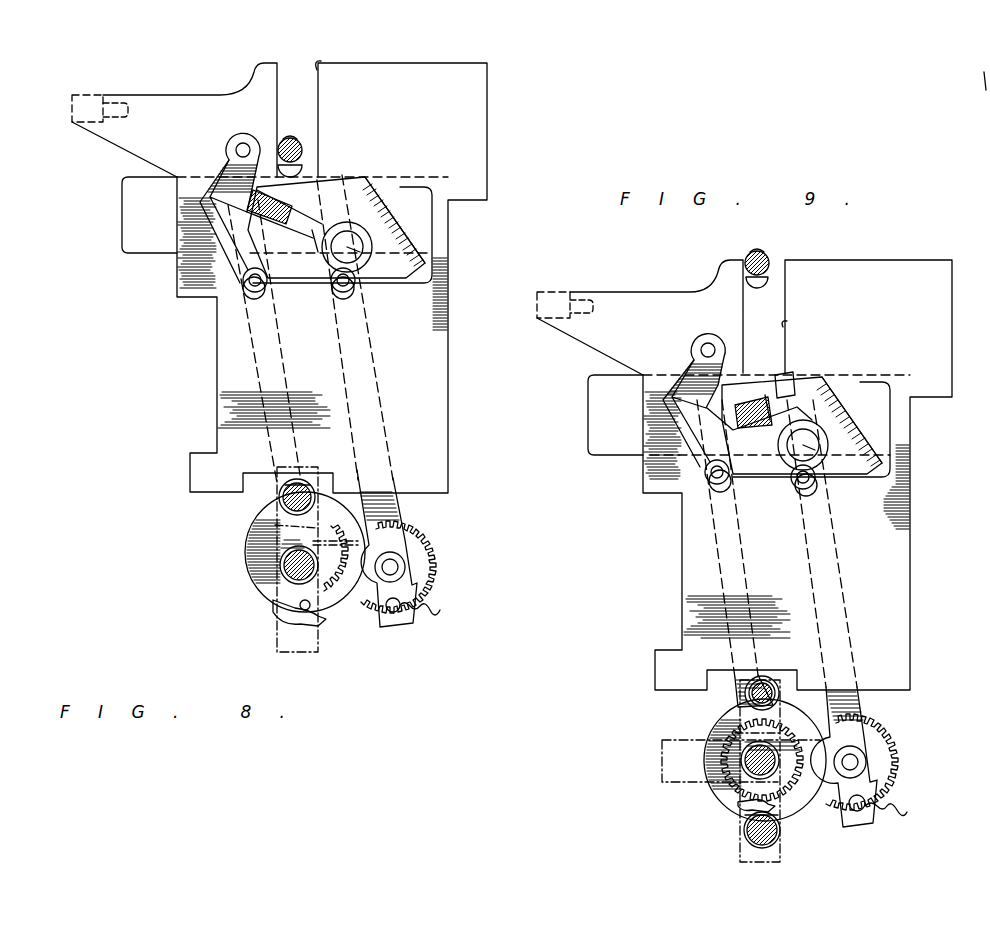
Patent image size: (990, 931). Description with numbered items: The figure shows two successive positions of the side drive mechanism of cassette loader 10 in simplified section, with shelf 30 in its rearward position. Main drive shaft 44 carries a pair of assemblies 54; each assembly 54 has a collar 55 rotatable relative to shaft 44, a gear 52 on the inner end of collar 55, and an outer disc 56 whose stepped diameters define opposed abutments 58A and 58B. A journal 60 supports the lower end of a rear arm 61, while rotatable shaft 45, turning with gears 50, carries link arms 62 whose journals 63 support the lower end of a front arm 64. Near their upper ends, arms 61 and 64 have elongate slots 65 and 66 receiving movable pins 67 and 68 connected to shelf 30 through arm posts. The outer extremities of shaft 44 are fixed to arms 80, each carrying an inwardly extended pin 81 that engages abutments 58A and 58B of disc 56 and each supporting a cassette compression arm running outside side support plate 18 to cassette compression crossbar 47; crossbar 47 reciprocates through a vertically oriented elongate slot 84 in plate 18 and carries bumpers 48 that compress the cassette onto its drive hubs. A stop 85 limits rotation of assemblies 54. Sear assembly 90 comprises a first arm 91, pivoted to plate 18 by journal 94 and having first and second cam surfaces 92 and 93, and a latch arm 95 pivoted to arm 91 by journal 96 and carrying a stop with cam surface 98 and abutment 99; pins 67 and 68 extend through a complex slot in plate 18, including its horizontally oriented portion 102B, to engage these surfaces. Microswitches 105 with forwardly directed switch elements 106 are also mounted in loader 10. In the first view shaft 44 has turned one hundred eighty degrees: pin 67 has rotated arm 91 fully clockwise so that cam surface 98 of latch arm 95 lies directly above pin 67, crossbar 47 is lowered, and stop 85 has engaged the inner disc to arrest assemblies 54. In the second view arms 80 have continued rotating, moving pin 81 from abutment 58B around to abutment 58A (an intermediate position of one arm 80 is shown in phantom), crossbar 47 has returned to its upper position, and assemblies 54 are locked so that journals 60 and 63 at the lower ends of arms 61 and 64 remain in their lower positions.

In FIG. 8, the cassette loader 10 is at (165, 345).
In FIG. 9, the cassette loader 10 is at (635, 500).
In FIG. 8, the side support plate 18 is at (430, 363).
In FIG. 9, the side support plate 18 is at (887, 550).
In FIG. 8, the shelf 30 is at (122, 215).
In FIG. 9, the shelf 30 is at (598, 398).
In FIG. 8, the main drive shaft 44 is at (283, 570).
In FIG. 9, the main drive shaft 44 is at (741, 760).
In FIG. 8, the rotatable shaft 45 is at (399, 563).
In FIG. 9, the rotatable shaft 45 is at (859, 762).
In FIG. 8, the cassette compression crossbar 47 is at (300, 147).
In FIG. 9, the cassette compression crossbar 47 is at (768, 260).
In FIG. 8, the bumper 48 is at (299, 167).
In FIG. 9, the bumper 48 is at (768, 280).
In FIG. 8, the gear 50 is at (430, 547).
In FIG. 9, the gear 50 is at (886, 750).
In FIG. 8, the gear 52 is at (355, 522).
In FIG. 9, the gear 52 is at (860, 715).
In FIG. 8, the assembly 54 is at (245, 531).
In FIG. 9, the assembly 54 is at (815, 812).
In FIG. 8, the collar 55 is at (290, 585).
In FIG. 9, the collar 55 is at (740, 739).
In FIG. 8, the outer disc 56 is at (310, 553).
In FIG. 9, the outer disc 56 is at (735, 727).
In FIG. 8, the abutment 58A is at (300, 615).
In FIG. 9, the abutment 58A is at (745, 832).
In FIG. 8, the abutment 58B is at (279, 500).
In FIG. 9, the abutment 58B is at (750, 701).
In FIG. 8, the journal 60 is at (323, 622).
In FIG. 9, the journal 60 is at (738, 805).
In FIG. 8, the rear arm 61 is at (288, 378).
In FIG. 9, the rear arm 61 is at (752, 580).
In FIG. 8, the link arm 62 is at (403, 587).
In FIG. 9, the link arm 62 is at (875, 785).
In FIG. 8, the journal 63 is at (440, 610).
In FIG. 9, the journal 63 is at (907, 812).
In FIG. 8, the front arm 64 is at (380, 400).
In FIG. 9, the front arm 64 is at (838, 580).
In FIG. 9, the elongate slot 65 is at (731, 485).
In FIG. 9, the elongate slot 66 is at (803, 493).
In FIG. 8, the movable pin 67 is at (243, 277).
In FIG. 9, the movable pin 67 is at (705, 475).
In FIG. 8, the movable pin 68 is at (353, 290).
In FIG. 9, the movable pin 68 is at (814, 487).
In FIG. 8, the arm 80 is at (300, 657).
In FIG. 9, the arm 80 is at (662, 775).
In FIG. 8, the pin 81 is at (303, 487).
In FIG. 9, the pin 81 is at (772, 840).
In FIG. 8, the elongate slot 84 is at (321, 65).
In FIG. 9, the elongate slot 84 is at (786, 324).
In FIG. 9, the stop 85 is at (768, 678).
In FIG. 8, the sear assembly 90 is at (387, 193).
In FIG. 9, the sear assembly 90 is at (848, 387).
In FIG. 8, the first arm 91 is at (387, 233).
In FIG. 9, the first arm 91 is at (840, 427).
In FIG. 8, the first cam surface 92 is at (383, 213).
In FIG. 9, the first cam surface 92 is at (845, 400).
In FIG. 8, the second cam surface 93 is at (213, 232).
In FIG. 9, the second cam surface 93 is at (683, 425).
In FIG. 8, the journal 94 is at (238, 148).
In FIG. 9, the journal 94 is at (702, 347).
In FIG. 8, the latch arm 95 is at (313, 255).
In FIG. 9, the latch arm 95 is at (765, 395).
In FIG. 8, the journal 96 is at (352, 249).
In FIG. 9, the journal 96 is at (808, 447).
In FIG. 8, the cam surface 98 is at (268, 218).
In FIG. 9, the cam surface 98 is at (728, 420).
In FIG. 8, the abutment 99 is at (225, 170).
In FIG. 9, the abutment 99 is at (690, 368).
In FIG. 9, the horizontally oriented portion 102B is at (773, 405).
In FIG. 8, the microswitch 105 is at (100, 98).
In FIG. 9, the microswitch 105 is at (578, 293).
In FIG. 8, the switch element 106 is at (120, 105).
In FIG. 9, the switch element 106 is at (590, 298).